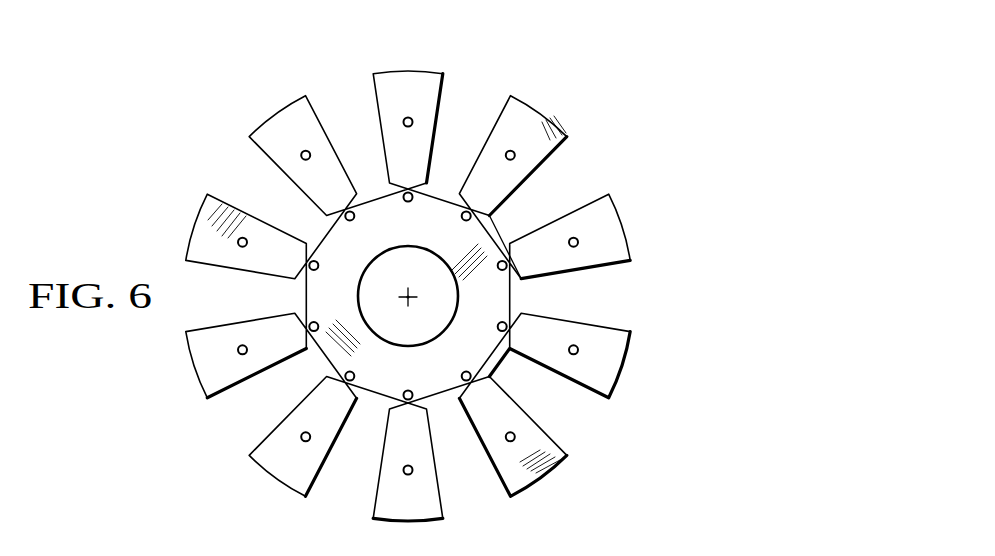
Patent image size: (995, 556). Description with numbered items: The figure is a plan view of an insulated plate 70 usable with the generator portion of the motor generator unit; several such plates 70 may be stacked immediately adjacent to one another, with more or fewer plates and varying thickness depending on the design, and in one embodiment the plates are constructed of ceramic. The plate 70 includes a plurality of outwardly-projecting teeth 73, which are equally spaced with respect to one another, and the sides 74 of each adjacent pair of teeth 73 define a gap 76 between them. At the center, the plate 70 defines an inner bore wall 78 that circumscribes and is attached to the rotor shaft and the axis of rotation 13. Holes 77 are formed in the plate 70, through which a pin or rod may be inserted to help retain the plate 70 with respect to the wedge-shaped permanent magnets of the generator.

The plate 70 is at (593, 44).
The outwardly-projecting teeth 73 is at (417, 90).
The sides 74 is at (532, 183).
The gap 76 is at (575, 188).
The holes 77 is at (574, 353).
The inner bore wall 78 is at (459, 285).
The axis of rotation 13 is at (408, 297).